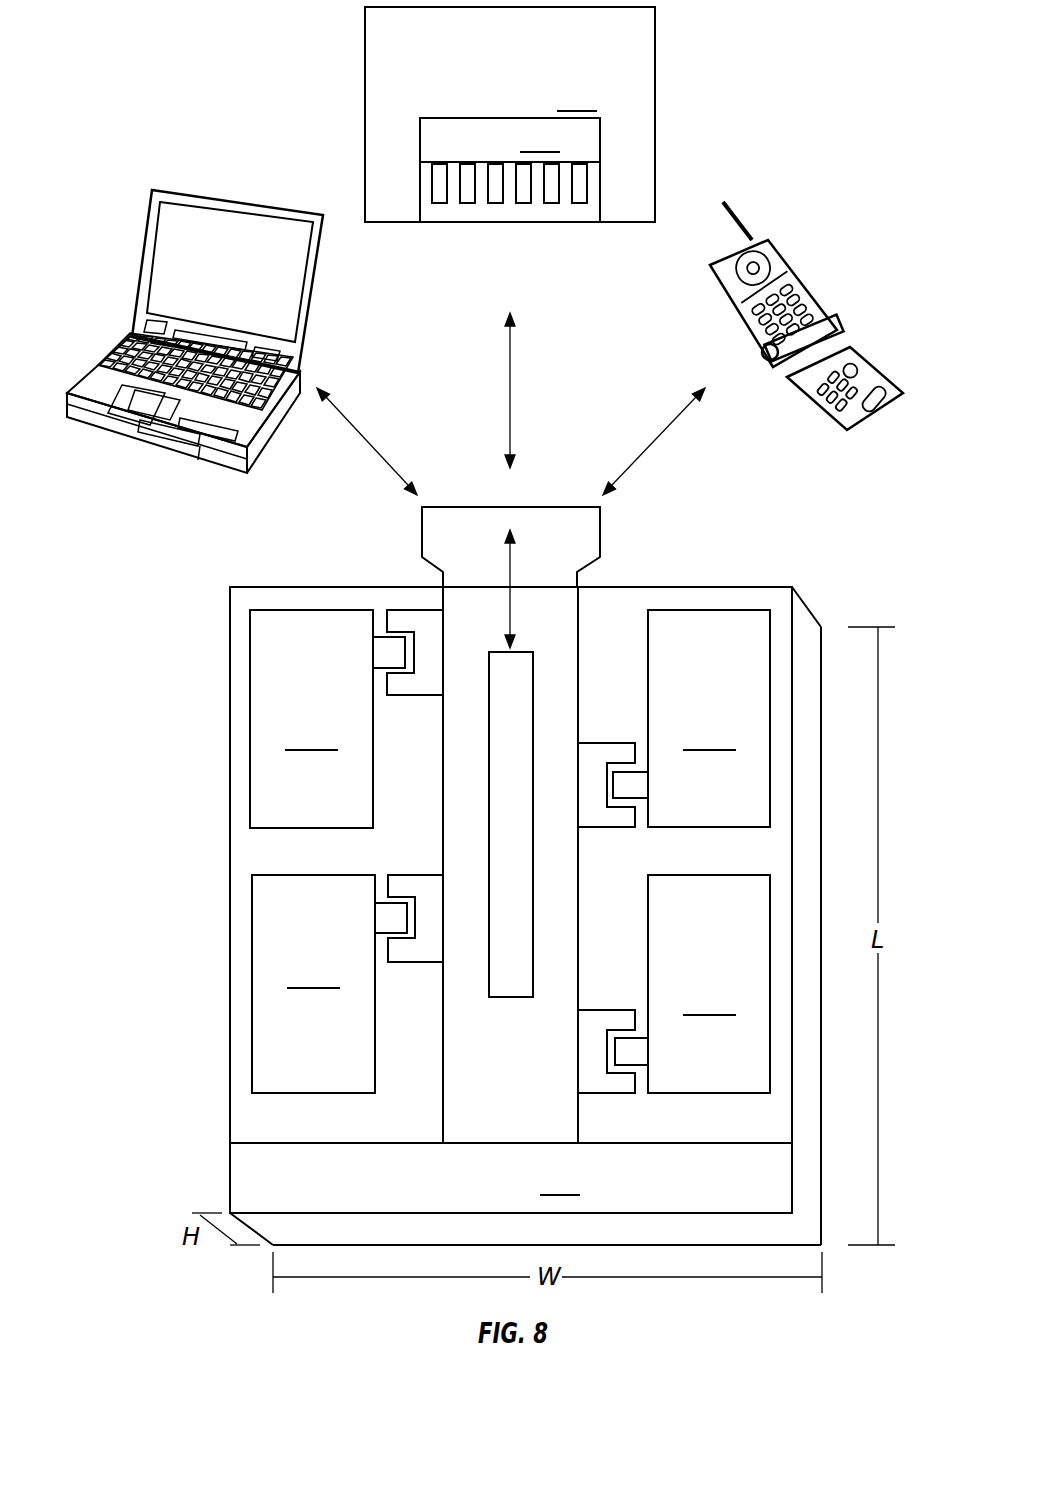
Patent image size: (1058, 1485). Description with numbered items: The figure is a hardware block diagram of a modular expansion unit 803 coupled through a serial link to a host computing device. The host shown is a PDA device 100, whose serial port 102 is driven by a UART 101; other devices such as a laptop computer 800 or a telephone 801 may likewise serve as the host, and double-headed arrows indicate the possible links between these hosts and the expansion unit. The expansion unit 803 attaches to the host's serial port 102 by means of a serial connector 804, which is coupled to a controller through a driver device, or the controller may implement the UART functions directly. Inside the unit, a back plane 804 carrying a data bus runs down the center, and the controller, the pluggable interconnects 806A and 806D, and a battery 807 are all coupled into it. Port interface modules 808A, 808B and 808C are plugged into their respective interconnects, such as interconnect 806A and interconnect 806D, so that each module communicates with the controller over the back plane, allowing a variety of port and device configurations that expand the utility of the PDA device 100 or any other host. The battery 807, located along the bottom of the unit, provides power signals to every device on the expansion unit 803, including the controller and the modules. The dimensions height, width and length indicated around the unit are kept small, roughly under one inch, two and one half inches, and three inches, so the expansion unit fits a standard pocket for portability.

The PDA device 100 is at (475, 114).
The UART 101 is at (510, 170).
The serial port 102 is at (625, 164).
The laptop computer 800 is at (195, 310).
The telephone 801 is at (809, 316).
The expansion unit 803 is at (185, 572).
The serial connector 804 is at (606, 815).
The pluggable interconnect 806A is at (376, 623).
The pluggable interconnect 806D is at (635, 1093).
The battery 807 is at (511, 1169).
The port interface module 808A is at (510, 851).
The port interface module 808B is at (313, 984).
The port interface module 808C is at (709, 718).